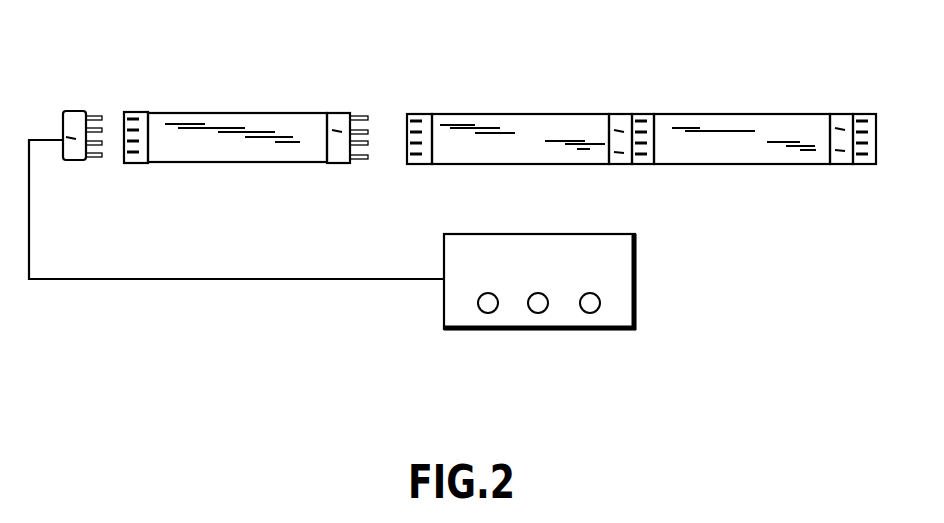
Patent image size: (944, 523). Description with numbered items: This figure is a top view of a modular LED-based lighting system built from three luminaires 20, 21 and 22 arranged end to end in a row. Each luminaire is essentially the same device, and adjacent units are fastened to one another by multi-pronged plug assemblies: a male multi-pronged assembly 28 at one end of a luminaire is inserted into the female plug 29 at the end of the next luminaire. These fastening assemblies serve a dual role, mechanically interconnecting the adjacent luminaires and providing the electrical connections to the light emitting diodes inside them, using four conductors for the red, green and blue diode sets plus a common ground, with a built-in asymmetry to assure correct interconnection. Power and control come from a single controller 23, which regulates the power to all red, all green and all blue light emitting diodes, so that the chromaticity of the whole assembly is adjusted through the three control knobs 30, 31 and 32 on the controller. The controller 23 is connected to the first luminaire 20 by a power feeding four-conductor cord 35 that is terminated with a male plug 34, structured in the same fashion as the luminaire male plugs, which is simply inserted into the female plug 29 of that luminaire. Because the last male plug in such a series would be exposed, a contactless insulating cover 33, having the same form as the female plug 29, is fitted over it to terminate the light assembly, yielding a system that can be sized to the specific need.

The luminaire 20 is at (246, 92).
The luminaire 21 is at (518, 95).
The luminaire 22 is at (769, 95).
The controller 23 is at (572, 313).
The multi-pronged assembly 28 is at (340, 112).
The female plug 29 is at (145, 112).
The control knob 30 is at (490, 310).
The control knob 31 is at (540, 310).
The control knob 32 is at (592, 308).
The contactless cover 33 is at (875, 113).
The plug 34 is at (73, 112).
The power feeding four-conductor cord 35 is at (268, 278).